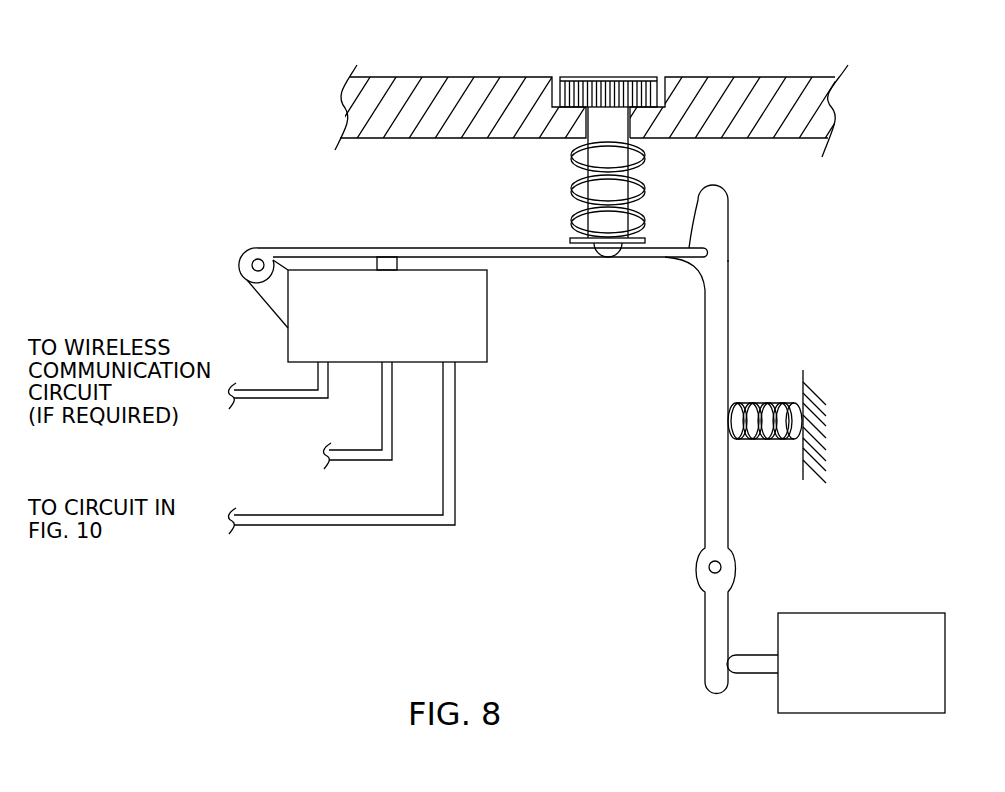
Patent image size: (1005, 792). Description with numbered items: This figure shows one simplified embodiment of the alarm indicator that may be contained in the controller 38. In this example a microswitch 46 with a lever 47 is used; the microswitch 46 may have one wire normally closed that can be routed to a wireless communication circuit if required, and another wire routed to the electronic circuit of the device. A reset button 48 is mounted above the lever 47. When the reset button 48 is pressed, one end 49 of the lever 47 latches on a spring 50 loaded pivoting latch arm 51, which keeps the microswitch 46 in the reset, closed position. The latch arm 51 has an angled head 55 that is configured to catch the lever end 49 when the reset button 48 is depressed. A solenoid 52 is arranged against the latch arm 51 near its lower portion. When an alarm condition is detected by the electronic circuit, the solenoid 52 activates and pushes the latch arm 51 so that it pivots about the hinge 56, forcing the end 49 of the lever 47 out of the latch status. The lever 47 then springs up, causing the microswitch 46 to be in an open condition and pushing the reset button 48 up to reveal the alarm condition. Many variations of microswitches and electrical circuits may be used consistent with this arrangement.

The controller 38 is at (465, 77).
The reset button 48 is at (607, 75).
The lever 47 is at (493, 248).
The microswitch 46 is at (487, 320).
The lever end 49 is at (660, 248).
The angled head 55 is at (717, 218).
The latch arm 51 is at (718, 348).
The spring 50 is at (767, 437).
The hinge 56 is at (721, 567).
The solenoid 52 is at (855, 613).